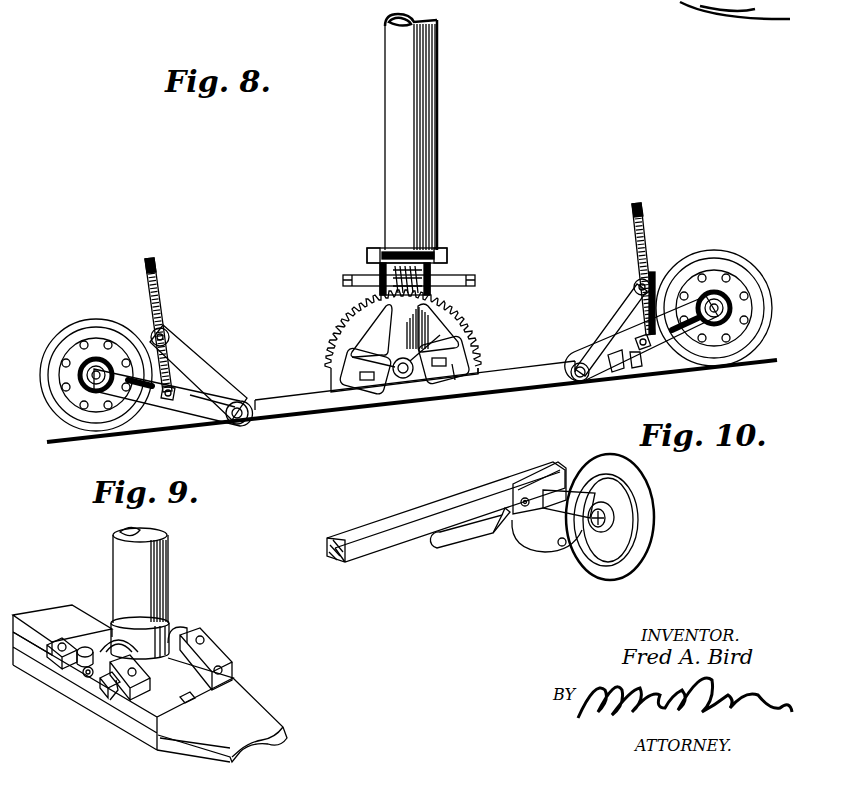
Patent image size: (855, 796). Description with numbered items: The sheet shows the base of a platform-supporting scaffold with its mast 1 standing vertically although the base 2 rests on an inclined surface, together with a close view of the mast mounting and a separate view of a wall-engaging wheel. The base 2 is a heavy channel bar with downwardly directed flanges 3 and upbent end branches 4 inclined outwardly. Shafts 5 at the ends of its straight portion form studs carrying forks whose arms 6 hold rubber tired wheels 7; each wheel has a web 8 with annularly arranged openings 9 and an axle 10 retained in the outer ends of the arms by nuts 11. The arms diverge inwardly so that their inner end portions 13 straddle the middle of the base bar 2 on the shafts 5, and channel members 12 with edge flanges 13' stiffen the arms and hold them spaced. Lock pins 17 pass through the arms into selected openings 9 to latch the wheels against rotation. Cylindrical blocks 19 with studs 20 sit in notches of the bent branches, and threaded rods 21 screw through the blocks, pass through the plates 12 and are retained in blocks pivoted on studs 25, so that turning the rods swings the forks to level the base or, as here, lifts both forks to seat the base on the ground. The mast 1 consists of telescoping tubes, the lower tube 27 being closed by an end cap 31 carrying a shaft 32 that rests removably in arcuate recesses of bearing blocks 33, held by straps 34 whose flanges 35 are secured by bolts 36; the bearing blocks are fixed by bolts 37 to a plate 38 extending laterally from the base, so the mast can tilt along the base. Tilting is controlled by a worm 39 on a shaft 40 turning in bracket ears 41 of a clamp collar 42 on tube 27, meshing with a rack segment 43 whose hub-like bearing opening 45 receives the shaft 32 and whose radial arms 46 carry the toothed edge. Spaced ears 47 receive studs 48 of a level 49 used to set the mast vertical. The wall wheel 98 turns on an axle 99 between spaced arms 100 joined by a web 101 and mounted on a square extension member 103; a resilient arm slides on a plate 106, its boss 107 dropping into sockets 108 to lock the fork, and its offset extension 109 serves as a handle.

In FIG. 8, the extensible platform-supporting mast 1 is at (417, 125).
In FIG. 9, the extensible platform-supporting mast 1 is at (150, 585).
In FIG. 8, the base 2 is at (262, 400).
In FIG. 9, the base 2 is at (243, 722).
In FIG. 8, the downwardly directed flanges 3 is at (515, 380).
In FIG. 9, the downwardly directed flanges 3 is at (203, 742).
In FIG. 8, the upbent end branches 4 is at (177, 350).
In FIG. 8, the shafts 5 is at (232, 420).
In FIG. 8, the arms 6 is at (182, 404).
In FIG. 8, the rubber tired wheels 7 is at (98, 425).
In FIG. 8, the webs 8 is at (70, 355).
In FIG. 8, the annularly arranged openings 9 is at (110, 347).
In FIG. 8, the axles 10 is at (78, 368).
In FIG. 8, the nuts 11 is at (80, 377).
In FIG. 8, the plates or channel members 12 is at (618, 335).
In FIG. 8, the inner end portions 13 is at (424, 381).
In FIG. 8, the edge flanges 13' is at (612, 383).
In FIG. 8, the lock pins 17 is at (143, 392).
In FIG. 8, the cylindrical blocks 19 is at (155, 332).
In FIG. 8, the studs 20 is at (166, 330).
In FIG. 8, the threaded rods 21 is at (162, 297).
In FIG. 8, the studs 25 is at (168, 402).
In FIG. 9, the lower tube 27 is at (152, 562).
In FIG. 8, the end cap 31 is at (356, 335).
In FIG. 9, the end cap 31 is at (165, 618).
In FIG. 8, the shaft 32 is at (440, 335).
In FIG. 9, the shaft 32 is at (62, 665).
In FIG. 8, the bearing blocks 33 is at (452, 362).
In FIG. 9, the bearing blocks 33 is at (85, 668).
In FIG. 9, the straps 34 is at (128, 655).
In FIG. 9, the flanges 35 is at (108, 692).
In FIG. 9, the bolts 36 is at (117, 712).
In FIG. 8, the bolts 37 is at (345, 362).
In FIG. 9, the bolts 37 is at (118, 690).
In FIG. 8, the plate 38 is at (458, 380).
In FIG. 9, the plate 38 is at (200, 692).
In FIG. 8, the worm 39 is at (440, 268).
In FIG. 8, the shaft 40 is at (374, 282).
In FIG. 8, the bracket ears 41 is at (440, 284).
In FIG. 8, the clamp collar 42 is at (376, 272).
In FIG. 8, the rack segment 43 is at (358, 312).
In FIG. 8, the hub-like bearing opening 45 is at (410, 379).
In FIG. 8, the radial arms 46 is at (360, 352).
In FIG. 8, the spaced ears 47 is at (378, 252).
In FIG. 8, the studs 48 is at (442, 255).
In FIG. 8, the level 49 is at (389, 250).
In FIG. 10, the wheels 98 is at (640, 502).
In FIG. 10, the axles 99 is at (623, 528).
In FIG. 10, the spaced arms 100 is at (557, 505).
In FIG. 10, the arm-connecting webs 101 is at (558, 470).
In FIG. 10, the extension members 103 is at (440, 505).
In FIG. 10, the plates 106 is at (527, 525).
In FIG. 10, the bosses 107 is at (525, 497).
In FIG. 10, the sockets 108 is at (565, 547).
In FIG. 10, the offset extensions 109 is at (470, 536).